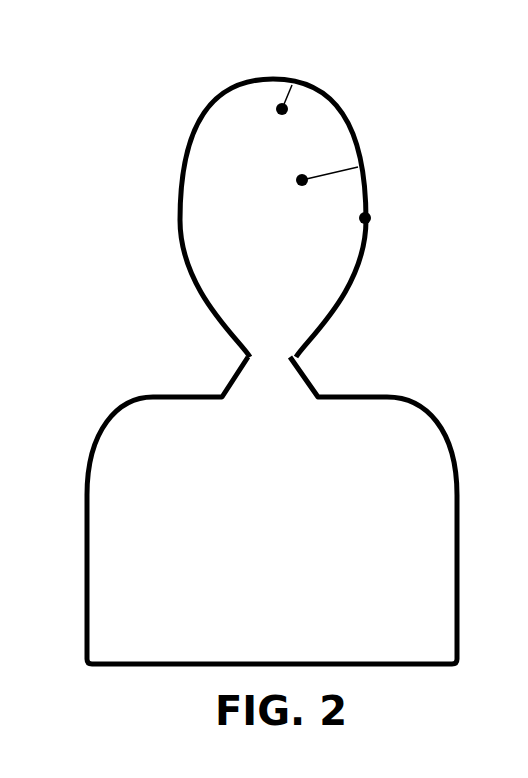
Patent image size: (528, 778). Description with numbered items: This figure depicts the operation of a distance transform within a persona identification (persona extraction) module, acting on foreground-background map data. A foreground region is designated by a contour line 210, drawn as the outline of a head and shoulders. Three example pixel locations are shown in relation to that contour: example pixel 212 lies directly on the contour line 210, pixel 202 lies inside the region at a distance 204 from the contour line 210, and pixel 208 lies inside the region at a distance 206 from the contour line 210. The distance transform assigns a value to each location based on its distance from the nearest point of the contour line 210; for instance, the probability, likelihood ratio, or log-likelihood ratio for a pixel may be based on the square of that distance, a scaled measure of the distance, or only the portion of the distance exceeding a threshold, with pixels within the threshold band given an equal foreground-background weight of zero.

The pixel 202 is at (282, 109).
The distance 204 is at (290, 97).
The distance 206 is at (327, 172).
The pixel 208 is at (302, 180).
The contour line 210 is at (180, 205).
The example pixel 212 is at (362, 219).